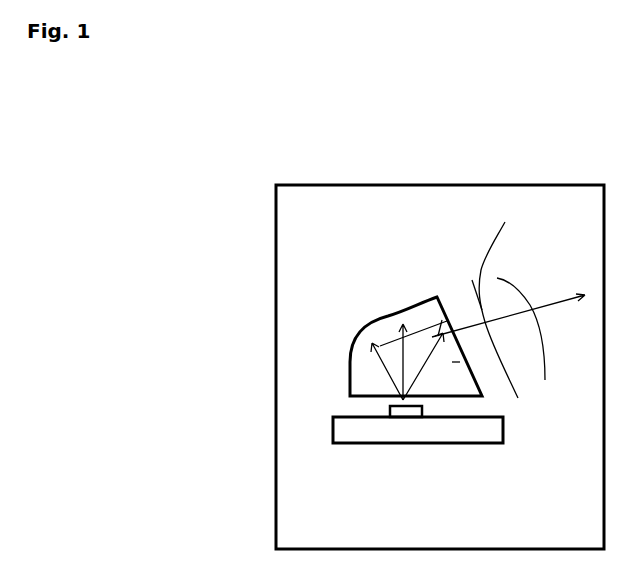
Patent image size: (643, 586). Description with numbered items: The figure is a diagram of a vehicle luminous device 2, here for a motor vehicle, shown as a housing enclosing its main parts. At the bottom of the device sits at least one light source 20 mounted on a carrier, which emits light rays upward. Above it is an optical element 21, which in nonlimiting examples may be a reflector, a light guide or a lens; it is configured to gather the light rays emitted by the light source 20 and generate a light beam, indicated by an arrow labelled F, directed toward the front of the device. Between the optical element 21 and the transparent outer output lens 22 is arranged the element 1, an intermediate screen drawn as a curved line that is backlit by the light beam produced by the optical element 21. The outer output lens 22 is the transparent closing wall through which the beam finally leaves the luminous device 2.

The element 1 is at (496, 294).
The vehicle luminous device 2 is at (457, 185).
The light source 20 is at (400, 420).
The optical element 21 is at (410, 306).
The outer output lens 22 is at (525, 290).